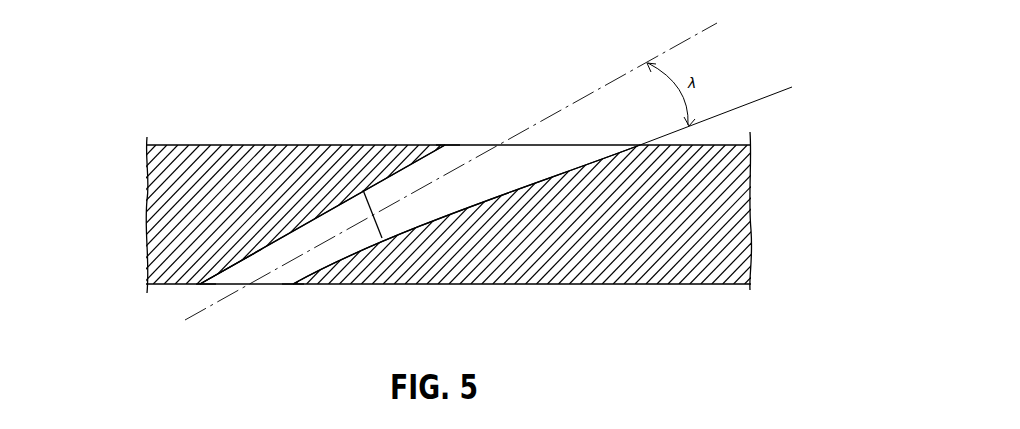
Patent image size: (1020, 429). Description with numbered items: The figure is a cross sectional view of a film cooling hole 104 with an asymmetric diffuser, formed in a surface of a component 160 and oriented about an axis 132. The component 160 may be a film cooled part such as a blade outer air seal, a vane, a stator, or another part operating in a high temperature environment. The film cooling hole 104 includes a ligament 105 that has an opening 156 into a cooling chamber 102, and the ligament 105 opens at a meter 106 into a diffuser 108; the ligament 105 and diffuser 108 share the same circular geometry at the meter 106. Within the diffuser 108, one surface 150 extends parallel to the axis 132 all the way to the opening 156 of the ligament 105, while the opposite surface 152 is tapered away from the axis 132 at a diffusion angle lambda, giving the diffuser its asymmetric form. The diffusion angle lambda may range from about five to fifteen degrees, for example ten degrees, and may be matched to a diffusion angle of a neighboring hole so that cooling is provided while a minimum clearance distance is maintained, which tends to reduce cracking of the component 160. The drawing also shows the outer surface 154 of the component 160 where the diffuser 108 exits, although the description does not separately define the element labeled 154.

The cooling chamber 102 is at (440, 317).
The film cooling hole 104 is at (290, 285).
The ligament 105 is at (242, 258).
The meter 106 is at (365, 190).
The diffuser 108 is at (455, 143).
The axis 132 is at (223, 298).
The surface 150 is at (397, 172).
The surface 152 is at (493, 196).
The outer surface 154 is at (477, 143).
The opening 156 is at (212, 286).
The component 160 is at (315, 160).